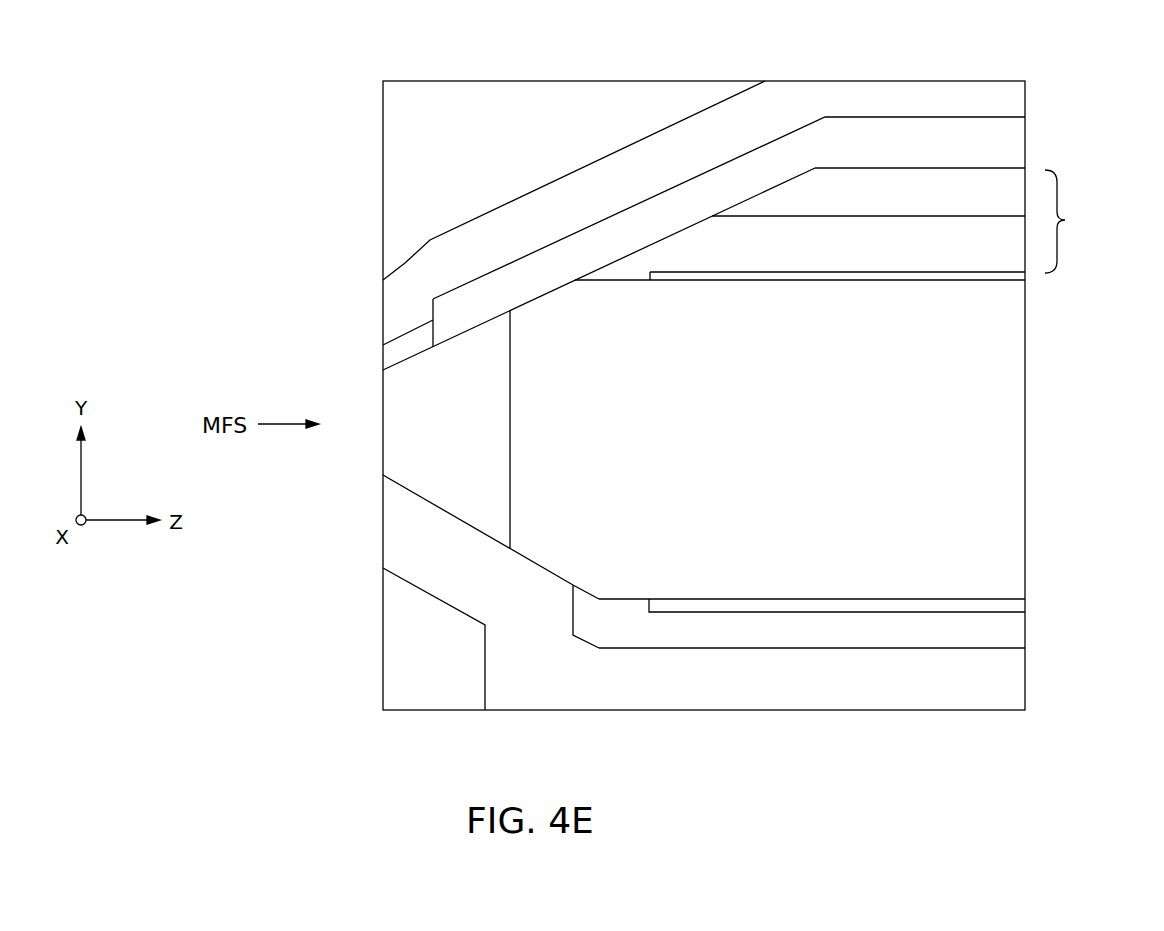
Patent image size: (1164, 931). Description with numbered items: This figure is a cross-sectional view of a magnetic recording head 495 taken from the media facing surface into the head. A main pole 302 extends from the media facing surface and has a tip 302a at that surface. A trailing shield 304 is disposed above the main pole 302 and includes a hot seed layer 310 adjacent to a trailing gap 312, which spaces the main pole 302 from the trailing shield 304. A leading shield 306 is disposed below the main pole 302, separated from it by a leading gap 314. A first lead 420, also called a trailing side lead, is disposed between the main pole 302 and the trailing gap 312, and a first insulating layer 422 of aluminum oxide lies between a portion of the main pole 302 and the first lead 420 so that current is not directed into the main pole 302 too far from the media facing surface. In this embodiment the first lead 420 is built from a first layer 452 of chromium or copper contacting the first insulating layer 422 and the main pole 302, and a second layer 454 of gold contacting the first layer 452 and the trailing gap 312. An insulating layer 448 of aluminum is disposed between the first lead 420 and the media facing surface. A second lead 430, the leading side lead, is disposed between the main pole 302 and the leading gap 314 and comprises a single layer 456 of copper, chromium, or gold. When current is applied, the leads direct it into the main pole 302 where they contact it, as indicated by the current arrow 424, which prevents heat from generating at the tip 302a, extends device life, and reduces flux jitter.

The magnetic recording head 495 is at (306, 76).
The trailing shield 304 is at (438, 192).
The hot seed layer 310 is at (463, 254).
The trailing gap 312 is at (524, 282).
The insulating layer 448 is at (398, 354).
The second layer 454 is at (920, 187).
The first layer 452 is at (868, 234).
The first lead 420 is at (1082, 221).
The first insulating layer 422 is at (858, 277).
The main pole 302 is at (699, 462).
The tip of the main pole 302a is at (465, 454).
The leading gap 314 is at (529, 687).
The current arrow 424 is at (800, 607).
The second lead 430 is at (651, 643).
The single layer 456 is at (812, 633).
The leading shield 306 is at (401, 678).